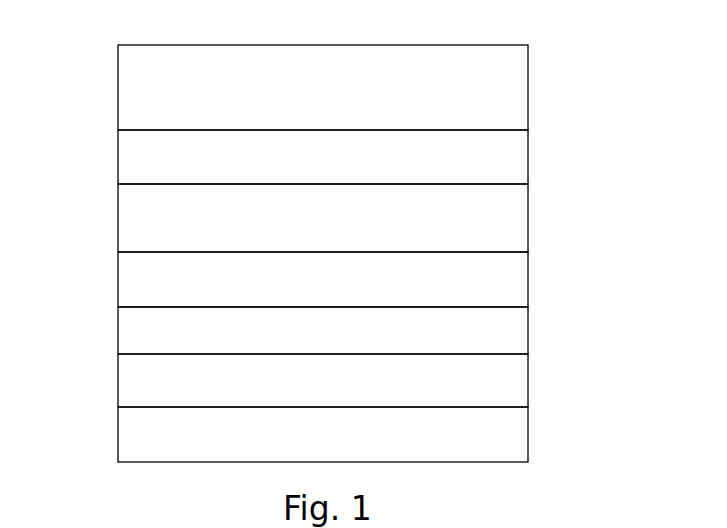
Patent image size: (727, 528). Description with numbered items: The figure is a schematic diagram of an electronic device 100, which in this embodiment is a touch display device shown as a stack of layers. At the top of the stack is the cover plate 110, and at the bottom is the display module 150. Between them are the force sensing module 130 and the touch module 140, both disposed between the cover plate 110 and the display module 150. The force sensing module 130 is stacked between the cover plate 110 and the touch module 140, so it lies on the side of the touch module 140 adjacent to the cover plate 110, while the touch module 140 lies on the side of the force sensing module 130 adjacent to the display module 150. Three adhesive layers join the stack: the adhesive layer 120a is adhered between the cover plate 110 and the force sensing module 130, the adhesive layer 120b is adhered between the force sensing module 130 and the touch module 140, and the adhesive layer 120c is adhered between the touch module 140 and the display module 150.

The electronic device 100 is at (83, 29).
The cover plate 110 is at (522, 95).
The adhesive layer 120a is at (522, 160).
The force sensing module 130 is at (522, 221).
The adhesive layer 120b is at (522, 283).
The touch module 140 is at (522, 333).
The adhesive layer 120c is at (522, 386).
The display module 150 is at (522, 440).